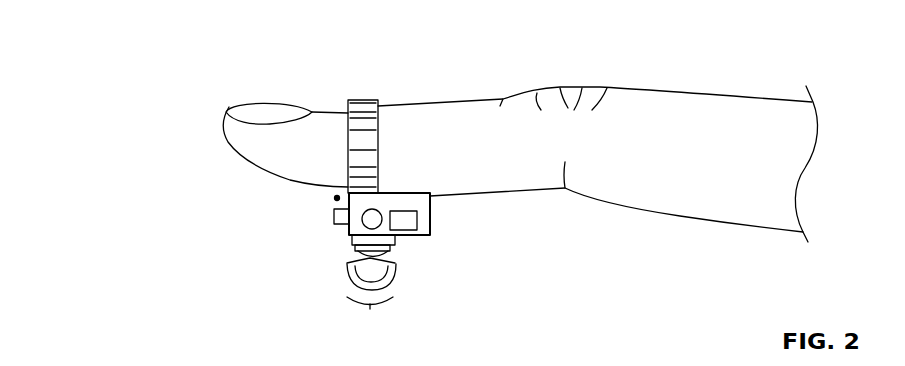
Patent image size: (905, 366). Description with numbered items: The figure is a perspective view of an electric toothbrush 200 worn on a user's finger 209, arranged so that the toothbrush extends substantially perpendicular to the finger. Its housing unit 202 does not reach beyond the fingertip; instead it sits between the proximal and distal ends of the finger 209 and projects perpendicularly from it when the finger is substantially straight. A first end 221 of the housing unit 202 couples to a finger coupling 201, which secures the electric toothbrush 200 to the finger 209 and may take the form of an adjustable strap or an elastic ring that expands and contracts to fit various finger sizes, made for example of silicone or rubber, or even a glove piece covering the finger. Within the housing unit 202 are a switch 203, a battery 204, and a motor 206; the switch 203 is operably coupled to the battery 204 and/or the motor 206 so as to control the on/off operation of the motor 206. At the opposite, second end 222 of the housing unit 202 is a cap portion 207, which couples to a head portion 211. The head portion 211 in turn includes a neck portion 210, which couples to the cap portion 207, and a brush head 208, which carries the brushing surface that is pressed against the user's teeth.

The electric toothbrush 200 is at (170, 42).
The finger coupling 201 is at (364, 98).
The housing unit 202 is at (432, 204).
The switch 203 is at (333, 216).
The battery 204 is at (354, 235).
The motor 206 is at (430, 227).
The cap portion 207 is at (395, 250).
The brush head 208 is at (397, 275).
The finger 209 is at (505, 99).
The neck portion 210 is at (357, 267).
The head portion 211 is at (397, 288).
The first end 221 is at (334, 198).
The second end 222 is at (350, 238).